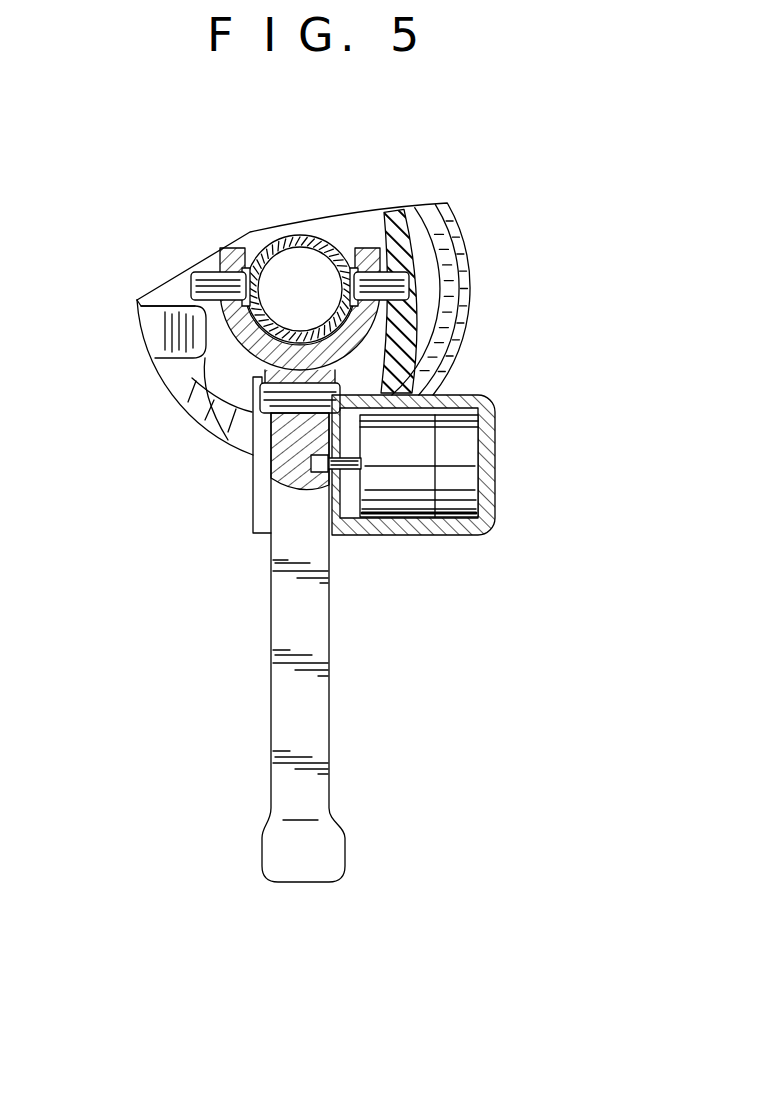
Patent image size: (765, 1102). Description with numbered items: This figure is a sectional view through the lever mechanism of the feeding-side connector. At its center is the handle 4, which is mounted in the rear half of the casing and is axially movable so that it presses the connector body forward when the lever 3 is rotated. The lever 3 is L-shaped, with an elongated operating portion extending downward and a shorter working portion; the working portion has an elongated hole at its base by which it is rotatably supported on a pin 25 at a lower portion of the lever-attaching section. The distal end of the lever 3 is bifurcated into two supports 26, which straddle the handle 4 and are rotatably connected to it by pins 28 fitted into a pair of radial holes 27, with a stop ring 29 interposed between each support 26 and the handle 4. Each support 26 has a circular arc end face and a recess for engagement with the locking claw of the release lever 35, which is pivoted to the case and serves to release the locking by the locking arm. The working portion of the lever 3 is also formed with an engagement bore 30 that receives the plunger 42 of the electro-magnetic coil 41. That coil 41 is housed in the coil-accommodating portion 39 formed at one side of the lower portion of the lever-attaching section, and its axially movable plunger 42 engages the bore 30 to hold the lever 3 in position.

The lever 3 is at (318, 725).
The handle 4 is at (360, 226).
The pin 25 is at (256, 414).
The supports 26 is at (437, 367).
The radial holes 27 is at (420, 287).
The pins 28 is at (437, 328).
The stop ring 29 is at (396, 274).
The engagement bore 30 is at (312, 462).
The release lever 35 is at (162, 332).
The coil-accommodating portion 39 is at (473, 536).
The electro-magnetic coil 41 is at (423, 433).
The plunger 42 is at (343, 472).